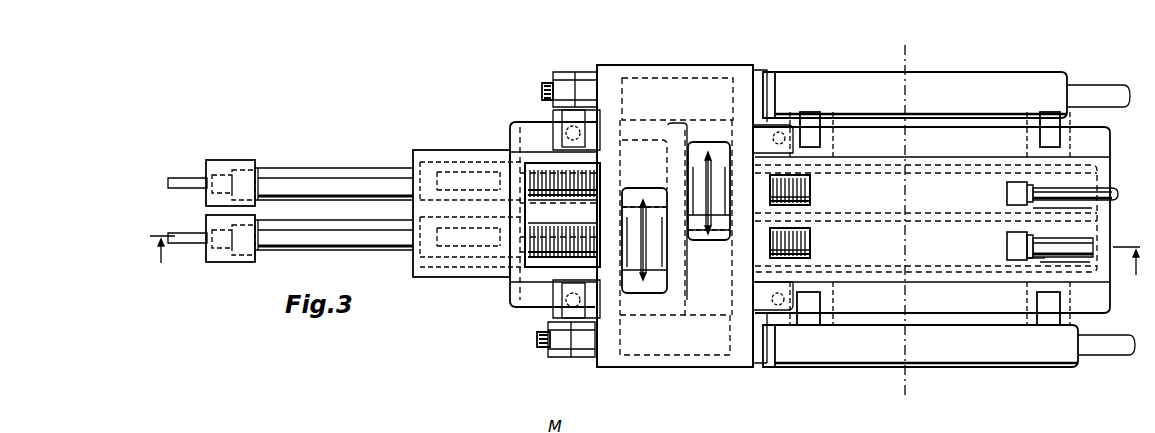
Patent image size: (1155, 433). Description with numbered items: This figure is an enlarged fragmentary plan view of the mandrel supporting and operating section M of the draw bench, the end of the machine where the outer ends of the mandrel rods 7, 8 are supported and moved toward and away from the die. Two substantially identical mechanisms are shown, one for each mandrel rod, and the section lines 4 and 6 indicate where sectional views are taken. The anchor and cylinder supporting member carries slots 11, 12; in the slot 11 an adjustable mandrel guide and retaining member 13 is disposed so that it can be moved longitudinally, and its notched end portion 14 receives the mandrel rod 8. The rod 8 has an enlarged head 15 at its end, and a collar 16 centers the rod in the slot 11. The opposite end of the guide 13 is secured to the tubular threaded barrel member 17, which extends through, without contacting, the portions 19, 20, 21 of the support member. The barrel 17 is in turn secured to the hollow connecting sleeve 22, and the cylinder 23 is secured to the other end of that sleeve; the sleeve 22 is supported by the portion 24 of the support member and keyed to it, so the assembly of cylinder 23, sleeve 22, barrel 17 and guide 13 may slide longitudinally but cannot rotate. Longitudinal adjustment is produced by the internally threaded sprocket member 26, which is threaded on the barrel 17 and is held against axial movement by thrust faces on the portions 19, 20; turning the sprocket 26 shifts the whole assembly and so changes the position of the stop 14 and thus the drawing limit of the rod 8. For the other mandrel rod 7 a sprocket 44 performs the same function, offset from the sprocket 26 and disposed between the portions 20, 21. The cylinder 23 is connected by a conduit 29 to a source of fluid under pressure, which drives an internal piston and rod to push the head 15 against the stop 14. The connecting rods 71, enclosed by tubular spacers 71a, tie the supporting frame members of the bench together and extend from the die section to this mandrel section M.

The section line 4- 4 is at (645, 266).
The section line 6- 6 is at (912, 47).
The mandrel rod 7 is at (1114, 192).
The mandrel rod 8 is at (1090, 246).
The slot 11 is at (1086, 260).
The slot 12 is at (1094, 209).
The adjustable mandrel guide and retaining member 13 is at (1042, 263).
The notched end portion 14 is at (1045, 237).
The enlarged head 15 is at (1015, 237).
The collar 16 is at (1030, 250).
The tubular threaded barrel member 17 is at (586, 236).
The portion of the mandrel anchor and cylinder support member 19 is at (612, 265).
The portion of the mandrel anchor and cylinder support member 20 is at (678, 153).
The portion of the mandrel anchor and cylinder support member 21 is at (736, 153).
The hollow connecting sleeve 22 is at (469, 268).
The cylinder 23 is at (302, 233).
The portion of the member 24 is at (460, 227).
The internally threaded sprocket member 26 is at (654, 255).
The conduit 29 is at (202, 238).
The sprocket 44 is at (716, 228).
The connecting rods 71 is at (546, 80).
The tubular spacers 71a is at (975, 93).
The mandrel operating and supporting section M is at (684, 66).